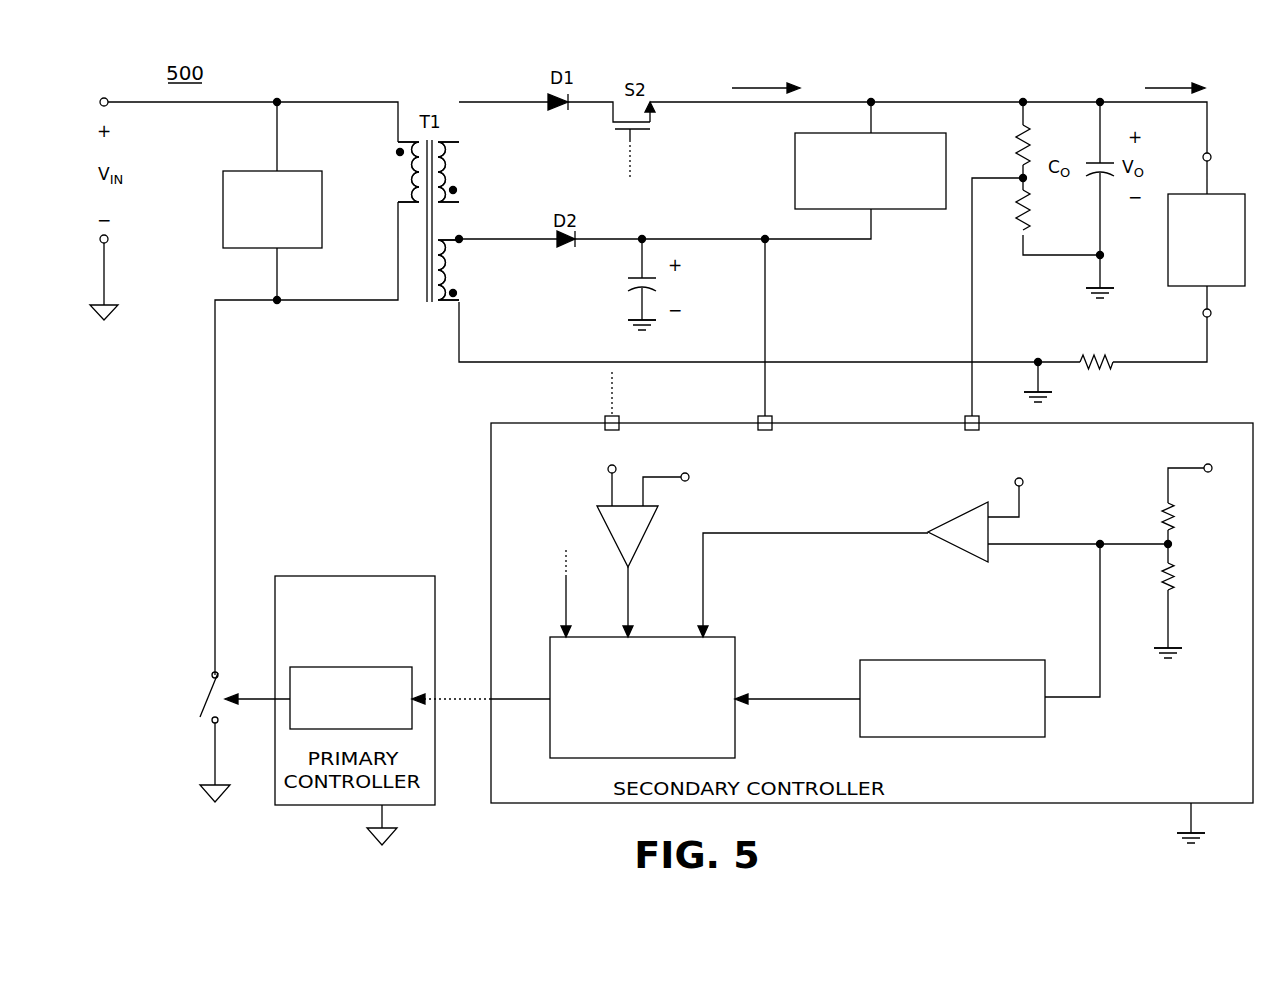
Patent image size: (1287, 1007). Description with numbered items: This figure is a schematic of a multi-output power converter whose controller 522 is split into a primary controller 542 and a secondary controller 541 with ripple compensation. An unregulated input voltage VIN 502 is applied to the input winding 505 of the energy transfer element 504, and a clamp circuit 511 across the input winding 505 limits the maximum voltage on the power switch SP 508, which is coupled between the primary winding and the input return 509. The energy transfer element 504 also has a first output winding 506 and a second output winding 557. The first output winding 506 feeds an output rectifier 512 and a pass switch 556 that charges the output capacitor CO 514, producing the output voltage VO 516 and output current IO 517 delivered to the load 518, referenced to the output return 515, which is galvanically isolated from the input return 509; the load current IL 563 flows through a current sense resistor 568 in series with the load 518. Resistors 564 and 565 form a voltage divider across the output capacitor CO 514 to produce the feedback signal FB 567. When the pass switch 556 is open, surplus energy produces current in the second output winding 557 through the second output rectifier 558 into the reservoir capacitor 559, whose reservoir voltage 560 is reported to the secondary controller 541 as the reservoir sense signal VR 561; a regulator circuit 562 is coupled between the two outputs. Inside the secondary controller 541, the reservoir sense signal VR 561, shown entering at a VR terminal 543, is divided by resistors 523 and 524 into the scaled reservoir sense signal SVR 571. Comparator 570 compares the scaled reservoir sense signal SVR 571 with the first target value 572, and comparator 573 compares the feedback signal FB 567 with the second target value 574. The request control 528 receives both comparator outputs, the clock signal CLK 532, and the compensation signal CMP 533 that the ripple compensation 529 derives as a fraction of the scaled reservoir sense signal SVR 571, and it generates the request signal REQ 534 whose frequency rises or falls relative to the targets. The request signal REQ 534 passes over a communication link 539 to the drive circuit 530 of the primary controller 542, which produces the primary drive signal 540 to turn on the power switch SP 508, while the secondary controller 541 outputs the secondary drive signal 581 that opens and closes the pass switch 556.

The input voltage VIN 502 is at (128, 156).
The energy transfer element T1 504 is at (427, 100).
The input winding 505 is at (392, 172).
The first output winding 506 is at (455, 172).
The power switch SP 508 is at (162, 684).
The input return 509 is at (112, 322).
The clamp circuit 511 is at (222, 226).
The output rectifier D1 512 is at (547, 81).
The output capacitor CO 514 is at (1093, 159).
The output return 515 is at (657, 333).
The output voltage VO 516 is at (1150, 151).
The output current IO 517 is at (822, 72).
The load 518 is at (1194, 292).
The controller 522 is at (346, 416).
The resistor 523 is at (1178, 520).
The resistor 524 is at (1183, 578).
The request control 528 is at (737, 657).
The ripple compensation 529 is at (1028, 657).
The drive circuit 530 is at (324, 657).
The clock signal CLK 532 is at (556, 526).
The compensation signal CMP 533 is at (805, 721).
The request signal REQ 534 is at (523, 726).
The communication link 539 is at (468, 708).
The primary drive signal DR1 540 is at (252, 728).
The secondary controller 541 is at (491, 476).
The primary controller 542 is at (335, 570).
The regulated voltage terminal VR 543 is at (1212, 462).
The pass switch S2 556 is at (657, 128).
The second output winding 557 is at (465, 284).
The second output rectifier D2 558 is at (563, 210).
The reservoir capacitor CRES 559 is at (588, 305).
The reservoir voltage VRES 560 is at (705, 272).
The reservoir sense signal VR 561 is at (757, 404).
The regulator circuit 562 is at (789, 175).
The load current IL 563 is at (1222, 68).
The resistor 564 is at (1010, 155).
The resistor 565 is at (1040, 208).
The feedback signal FB 567 is at (963, 398).
The current sense resistor 568 is at (1085, 348).
The comparator 570 is at (951, 548).
The scaled reservoir sense signal SVR 571 is at (1128, 519).
The first target value TARGET1 572 is at (966, 465).
The comparator 573 is at (645, 546).
The second target value TARGET2 574 is at (730, 504).
The secondary drive signal DR2 581 is at (683, 197).